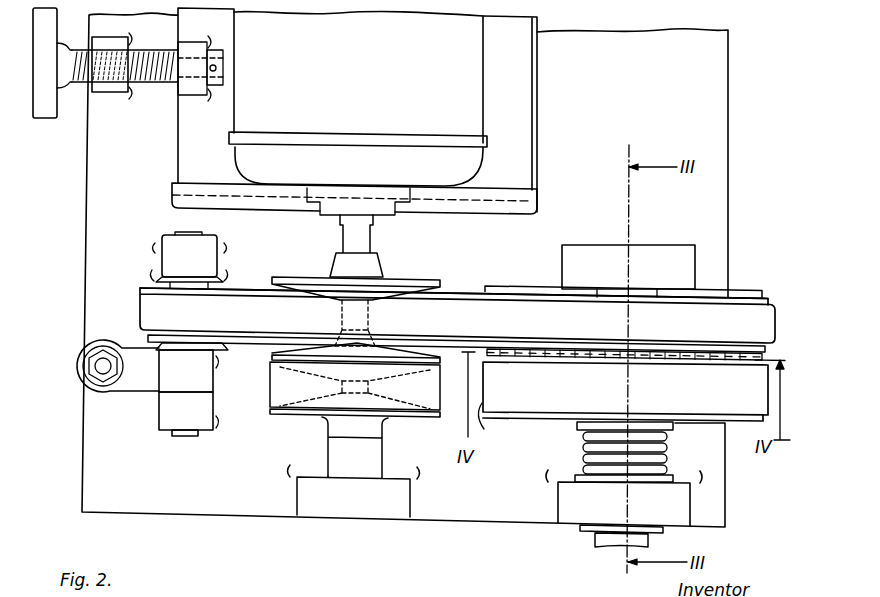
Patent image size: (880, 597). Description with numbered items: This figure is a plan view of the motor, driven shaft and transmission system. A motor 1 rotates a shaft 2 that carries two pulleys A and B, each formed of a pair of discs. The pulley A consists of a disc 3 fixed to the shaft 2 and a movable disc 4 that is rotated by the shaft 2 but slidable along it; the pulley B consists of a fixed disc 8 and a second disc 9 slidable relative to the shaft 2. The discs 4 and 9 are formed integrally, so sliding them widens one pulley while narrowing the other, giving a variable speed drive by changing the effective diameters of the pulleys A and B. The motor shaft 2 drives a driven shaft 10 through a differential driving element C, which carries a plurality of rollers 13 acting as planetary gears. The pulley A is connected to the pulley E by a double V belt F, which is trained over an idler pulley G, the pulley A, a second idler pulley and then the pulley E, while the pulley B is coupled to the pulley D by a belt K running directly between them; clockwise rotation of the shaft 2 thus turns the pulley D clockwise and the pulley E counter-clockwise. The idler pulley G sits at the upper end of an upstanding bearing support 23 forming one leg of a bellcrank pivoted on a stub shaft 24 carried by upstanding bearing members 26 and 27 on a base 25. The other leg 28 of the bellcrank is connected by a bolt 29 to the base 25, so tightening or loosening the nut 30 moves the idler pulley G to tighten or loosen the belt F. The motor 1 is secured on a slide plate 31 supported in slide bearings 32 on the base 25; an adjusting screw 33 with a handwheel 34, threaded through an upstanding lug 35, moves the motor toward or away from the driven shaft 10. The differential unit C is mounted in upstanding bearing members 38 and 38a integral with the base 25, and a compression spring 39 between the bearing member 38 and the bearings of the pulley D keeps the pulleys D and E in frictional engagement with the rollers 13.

The motor 1 is at (480, 104).
The shaft 2 is at (365, 240).
The disc 3 is at (367, 297).
The movable disc 4 is at (285, 348).
The fixed disc 8 is at (355, 463).
The disc 9 is at (304, 370).
The driven shaft 10 is at (600, 537).
The rollers 13 is at (685, 357).
The bearing support 23 is at (213, 373).
The stub shaft 24 is at (183, 437).
The base 25 is at (88, 458).
The bearing member 26 is at (160, 410).
The bearing member 27 is at (212, 260).
The leg 28 is at (101, 376).
The bolt 29 is at (100, 365).
The nut 30 is at (92, 372).
The slide plate 31 is at (530, 58).
The slide bearings 32 is at (510, 191).
The adjusting screw 33 is at (156, 84).
The handwheel 34 is at (47, 118).
The upstanding lug 35 is at (112, 90).
The bearing member 38 is at (560, 502).
The bearing member 38a is at (667, 252).
The compression spring 39 is at (667, 455).
The pulley A is at (434, 279).
The pulley B is at (433, 418).
The differential driving element C is at (538, 284).
The pulley D is at (740, 432).
The pulley E is at (741, 297).
The belt F is at (457, 296).
The idler pulley G is at (158, 287).
The belt K is at (482, 397).